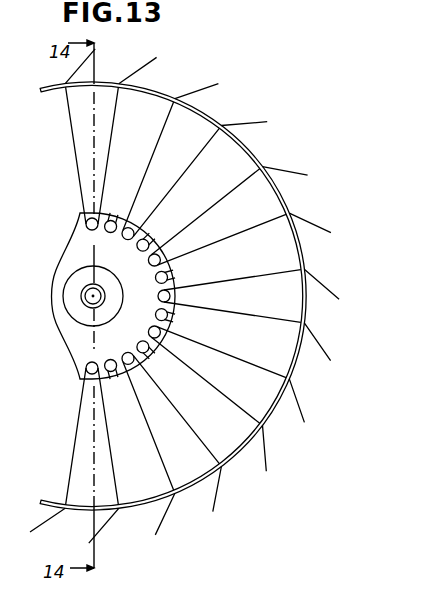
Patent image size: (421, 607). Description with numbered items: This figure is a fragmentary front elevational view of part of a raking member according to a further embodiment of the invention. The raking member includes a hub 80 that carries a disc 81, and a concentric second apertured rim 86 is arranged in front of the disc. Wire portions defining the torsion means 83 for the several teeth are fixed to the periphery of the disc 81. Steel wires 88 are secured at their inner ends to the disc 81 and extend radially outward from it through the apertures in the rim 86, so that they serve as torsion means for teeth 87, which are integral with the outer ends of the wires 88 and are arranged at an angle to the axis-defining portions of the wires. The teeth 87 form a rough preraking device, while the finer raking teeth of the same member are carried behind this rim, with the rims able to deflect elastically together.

The hub 80 is at (105, 290).
The disc 81 is at (82, 349).
The torsion means 83 is at (129, 219).
The second apertured rim 86 is at (206, 123).
The teeth 87 is at (190, 96).
The steel wires 88 is at (168, 198).